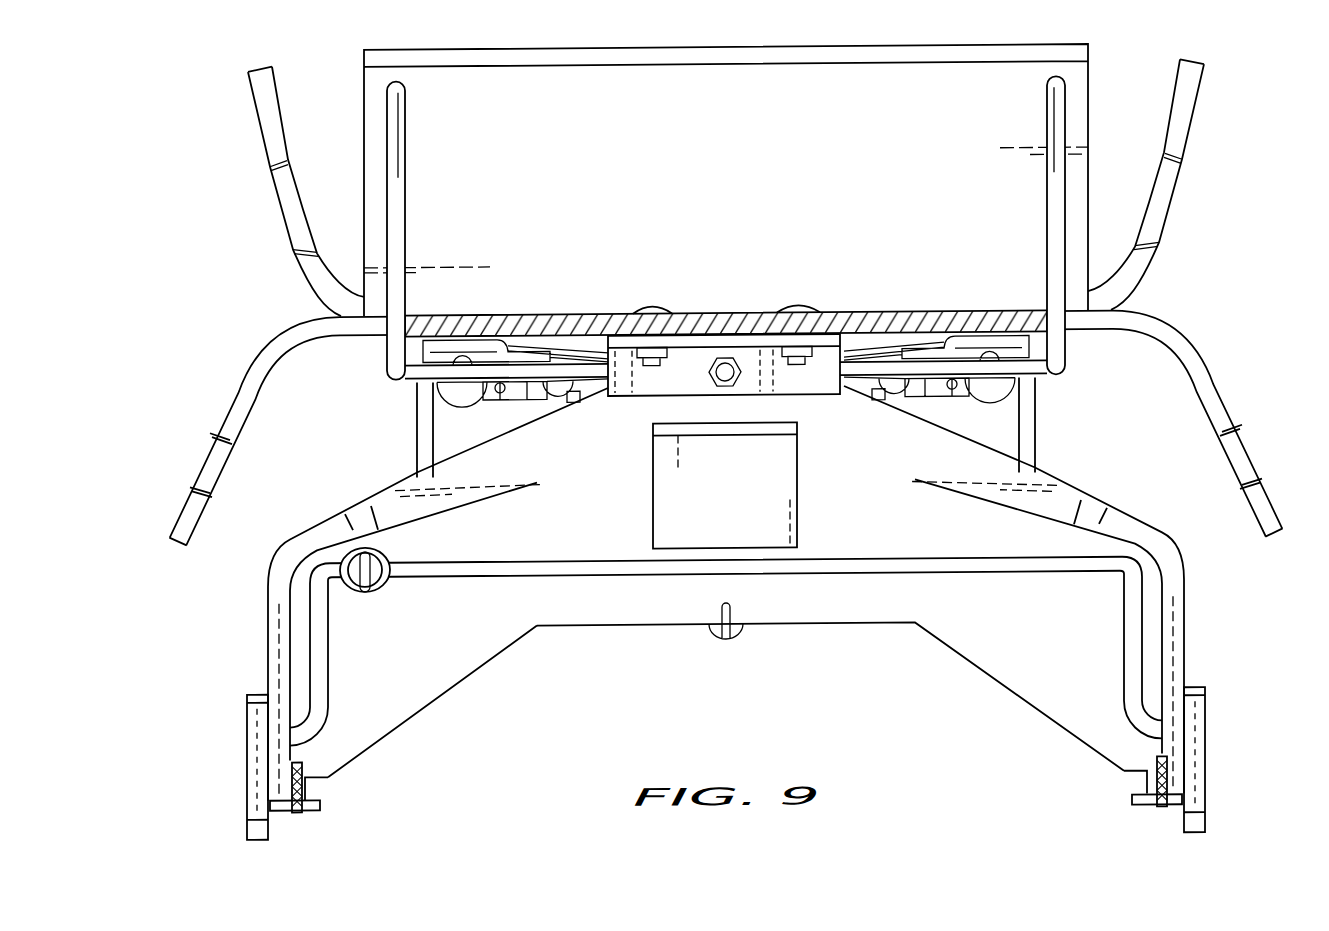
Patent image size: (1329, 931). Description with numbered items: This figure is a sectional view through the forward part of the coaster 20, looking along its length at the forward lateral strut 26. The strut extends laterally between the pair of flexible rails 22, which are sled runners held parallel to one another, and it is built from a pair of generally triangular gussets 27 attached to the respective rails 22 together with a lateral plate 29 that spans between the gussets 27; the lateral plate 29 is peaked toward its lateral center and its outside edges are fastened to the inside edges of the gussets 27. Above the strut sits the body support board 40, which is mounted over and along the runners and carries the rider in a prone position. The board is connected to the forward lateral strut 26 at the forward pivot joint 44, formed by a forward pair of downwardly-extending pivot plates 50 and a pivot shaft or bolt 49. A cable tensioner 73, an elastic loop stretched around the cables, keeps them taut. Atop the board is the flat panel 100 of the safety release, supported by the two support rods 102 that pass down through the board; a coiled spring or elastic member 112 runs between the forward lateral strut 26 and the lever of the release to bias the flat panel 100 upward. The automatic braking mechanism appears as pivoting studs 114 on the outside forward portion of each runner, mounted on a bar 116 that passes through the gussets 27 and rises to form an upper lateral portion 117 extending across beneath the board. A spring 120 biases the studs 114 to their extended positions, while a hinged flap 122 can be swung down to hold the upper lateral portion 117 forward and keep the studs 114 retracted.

The coaster 20 is at (716, 430).
The flat panel 100 is at (748, 181).
The support rods 102 is at (393, 226).
The body support board 40 is at (273, 320).
The cable tensioner 73 is at (573, 399).
The pivot plates 50 is at (660, 381).
The pivot shaft or bolt 49 is at (725, 378).
The forward pivot joint 44 is at (790, 381).
The flap 122 is at (747, 496).
The spring 120 is at (372, 550).
The upper lateral portion 117 is at (473, 565).
The bar 116 is at (325, 610).
The gussets 27 is at (275, 616).
The lateral plate 29 is at (415, 658).
The coiled spring or elastic member 112 is at (735, 636).
The forward lateral strut 26 is at (971, 631).
The braking elements or pivoting studs 114 is at (258, 781).
The flexible rails 22 is at (306, 806).